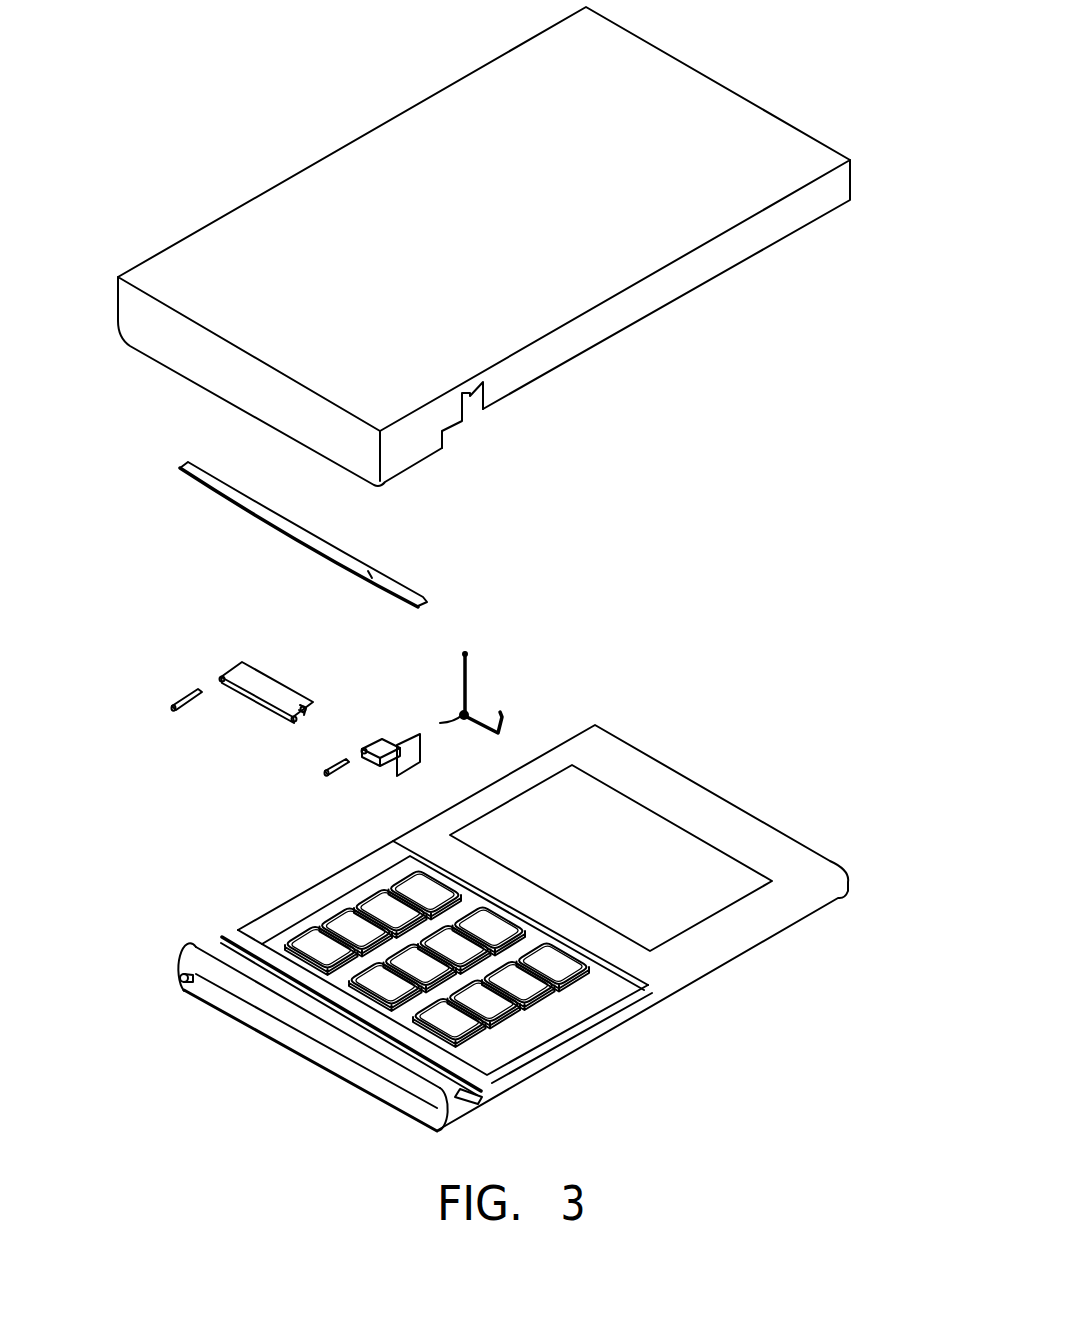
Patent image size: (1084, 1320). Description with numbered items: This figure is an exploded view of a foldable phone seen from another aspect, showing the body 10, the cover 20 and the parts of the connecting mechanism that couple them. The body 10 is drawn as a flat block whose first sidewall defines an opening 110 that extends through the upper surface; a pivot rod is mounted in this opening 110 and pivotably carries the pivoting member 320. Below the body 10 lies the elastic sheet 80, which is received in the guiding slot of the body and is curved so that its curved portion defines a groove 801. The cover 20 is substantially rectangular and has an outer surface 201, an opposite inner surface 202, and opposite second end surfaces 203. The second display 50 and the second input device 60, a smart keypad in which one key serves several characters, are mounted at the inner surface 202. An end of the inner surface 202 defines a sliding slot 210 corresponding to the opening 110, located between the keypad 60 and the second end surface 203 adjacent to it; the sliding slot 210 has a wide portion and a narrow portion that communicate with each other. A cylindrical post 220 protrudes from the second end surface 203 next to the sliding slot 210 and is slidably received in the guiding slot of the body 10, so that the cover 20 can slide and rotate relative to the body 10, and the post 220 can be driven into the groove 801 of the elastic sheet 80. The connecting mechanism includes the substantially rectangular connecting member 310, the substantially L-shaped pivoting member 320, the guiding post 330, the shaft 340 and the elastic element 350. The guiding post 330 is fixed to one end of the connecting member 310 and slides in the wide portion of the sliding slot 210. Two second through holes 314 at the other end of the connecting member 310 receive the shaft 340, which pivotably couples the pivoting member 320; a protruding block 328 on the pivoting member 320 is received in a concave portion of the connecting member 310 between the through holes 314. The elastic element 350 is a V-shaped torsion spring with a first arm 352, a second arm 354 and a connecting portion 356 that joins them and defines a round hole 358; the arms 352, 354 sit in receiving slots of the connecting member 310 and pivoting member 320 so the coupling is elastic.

The body 10 is at (304, 126).
The opening 110 is at (470, 408).
The cover 20 is at (505, 922).
The outer surface 201 is at (733, 963).
The inner surface 202 is at (695, 810).
The second end surfaces 203 is at (333, 1055).
The sliding slot 210 is at (460, 1088).
The cylindrical post 220 is at (185, 982).
The second display 50 is at (602, 820).
The second input device 60 is at (572, 972).
The elastic sheet 80 is at (291, 528).
The groove 801 is at (370, 572).
The connecting member 310 is at (247, 675).
The second through holes 314 is at (288, 718).
The pivoting member 320 is at (382, 748).
The protruding block 328 is at (360, 750).
The guiding post 330 is at (188, 718).
The shaft 340 is at (340, 777).
The elastic element 350 is at (560, 666).
The first arm 352 is at (467, 660).
The second arm 354 is at (531, 710).
The connecting portion 356 is at (468, 707).
The round hole 358 is at (453, 725).